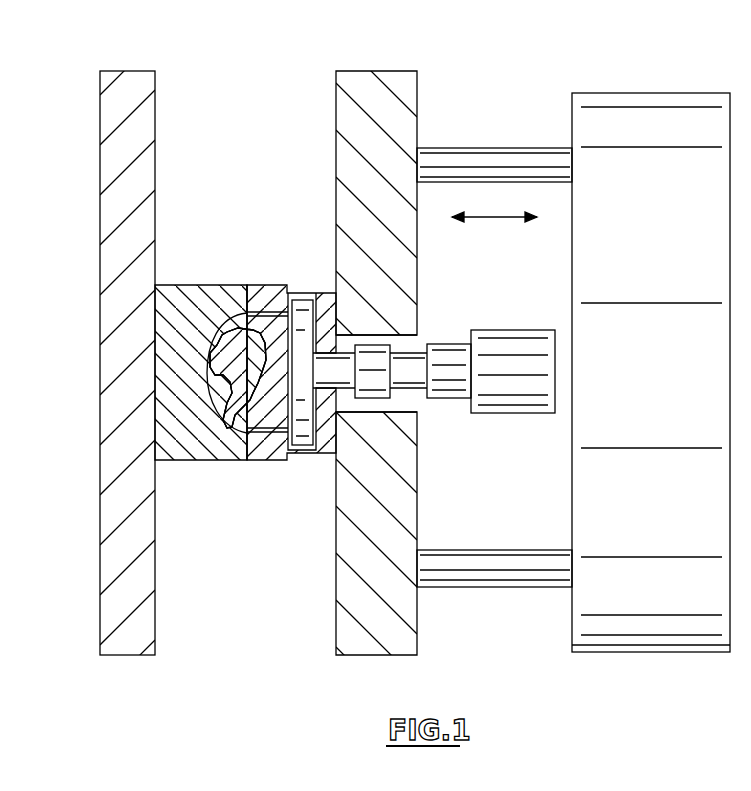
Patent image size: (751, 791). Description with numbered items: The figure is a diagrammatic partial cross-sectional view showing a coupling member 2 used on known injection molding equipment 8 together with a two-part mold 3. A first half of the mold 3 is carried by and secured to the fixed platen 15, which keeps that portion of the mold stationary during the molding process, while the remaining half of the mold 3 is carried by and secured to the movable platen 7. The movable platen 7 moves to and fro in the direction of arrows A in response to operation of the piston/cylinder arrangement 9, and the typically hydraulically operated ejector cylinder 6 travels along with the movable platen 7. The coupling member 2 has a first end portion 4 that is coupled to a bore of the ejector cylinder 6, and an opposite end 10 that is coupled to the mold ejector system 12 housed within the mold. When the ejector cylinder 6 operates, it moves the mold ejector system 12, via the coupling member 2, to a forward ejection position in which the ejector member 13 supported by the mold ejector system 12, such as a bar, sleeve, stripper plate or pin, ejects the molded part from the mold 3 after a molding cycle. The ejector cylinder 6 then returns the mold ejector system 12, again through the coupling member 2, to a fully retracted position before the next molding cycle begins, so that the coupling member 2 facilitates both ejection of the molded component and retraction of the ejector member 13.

The coupling member 2 is at (370, 400).
The two-part mold 3 is at (258, 285).
The first end portion 4 is at (452, 344).
The ejector cylinder 6 is at (530, 413).
The movable platen 7 is at (378, 71).
The injection molding equipment 8 is at (585, 43).
The piston/cylinder arrangement 9 is at (660, 372).
The opposite end 10 is at (343, 335).
The mold ejector system 12 is at (303, 447).
The ejector member 13 is at (215, 387).
The fixed platen 15 is at (148, 71).